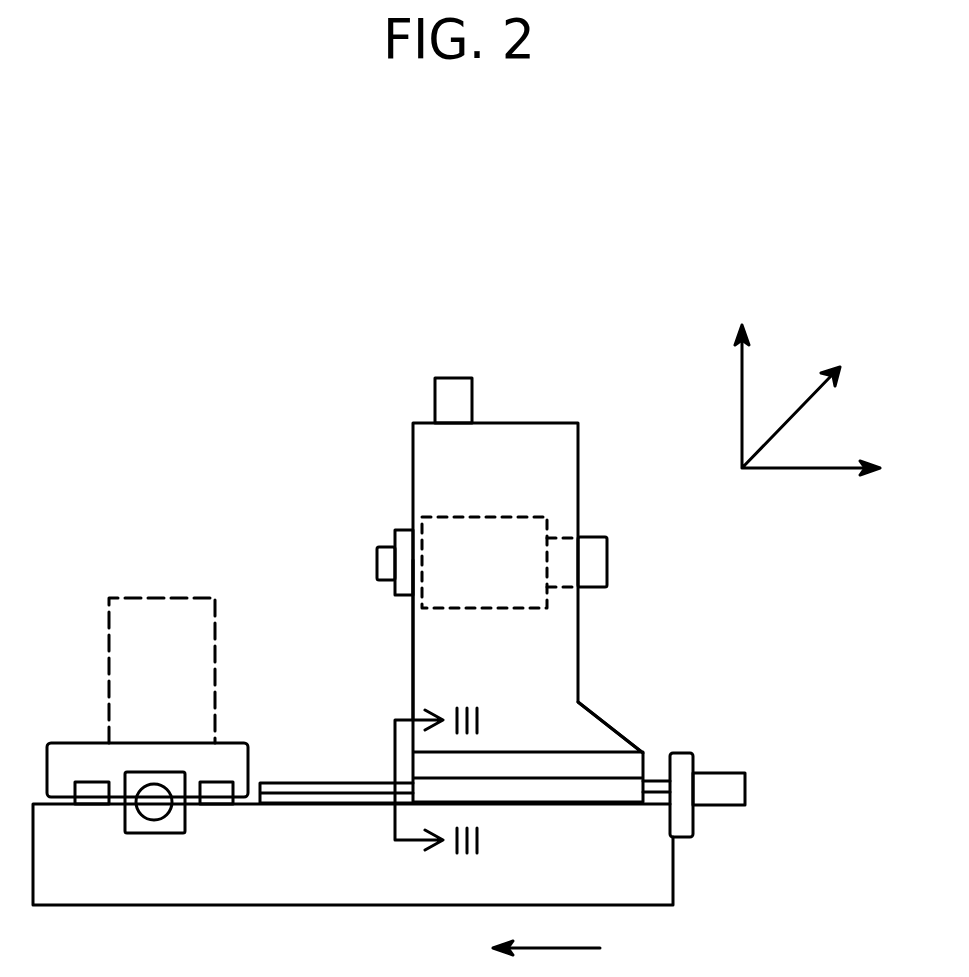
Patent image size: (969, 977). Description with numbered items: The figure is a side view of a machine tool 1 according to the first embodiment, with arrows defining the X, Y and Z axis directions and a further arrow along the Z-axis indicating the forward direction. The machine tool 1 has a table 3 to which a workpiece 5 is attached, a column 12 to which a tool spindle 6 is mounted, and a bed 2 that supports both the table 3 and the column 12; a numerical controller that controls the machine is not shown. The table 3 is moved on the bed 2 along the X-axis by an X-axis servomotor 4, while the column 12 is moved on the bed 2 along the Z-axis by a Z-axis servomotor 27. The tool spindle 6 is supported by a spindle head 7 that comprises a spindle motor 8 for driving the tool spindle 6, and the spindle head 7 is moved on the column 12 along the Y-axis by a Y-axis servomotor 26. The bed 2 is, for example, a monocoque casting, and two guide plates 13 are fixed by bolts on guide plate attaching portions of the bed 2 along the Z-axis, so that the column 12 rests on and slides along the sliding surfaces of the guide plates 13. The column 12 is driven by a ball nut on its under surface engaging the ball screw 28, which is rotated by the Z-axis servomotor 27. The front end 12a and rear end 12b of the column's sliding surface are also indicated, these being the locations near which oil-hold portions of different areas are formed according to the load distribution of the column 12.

The machine tool 1 is at (325, 385).
The bed 2 is at (648, 878).
The table 3 is at (80, 757).
The X-axis servomotor 4 is at (155, 808).
The workpiece 5 is at (160, 600).
The tool spindle 6 is at (380, 560).
The spindle head 7 is at (472, 530).
The spindle motor 8 is at (592, 550).
The column 12 is at (543, 423).
The front end 12a is at (413, 642).
The rear end 12b is at (652, 762).
The guide plate 13 is at (288, 783).
The Y-axis servomotor 26 is at (453, 395).
The Z-axis servomotor 27 is at (725, 781).
The ball screw 28 is at (658, 778).